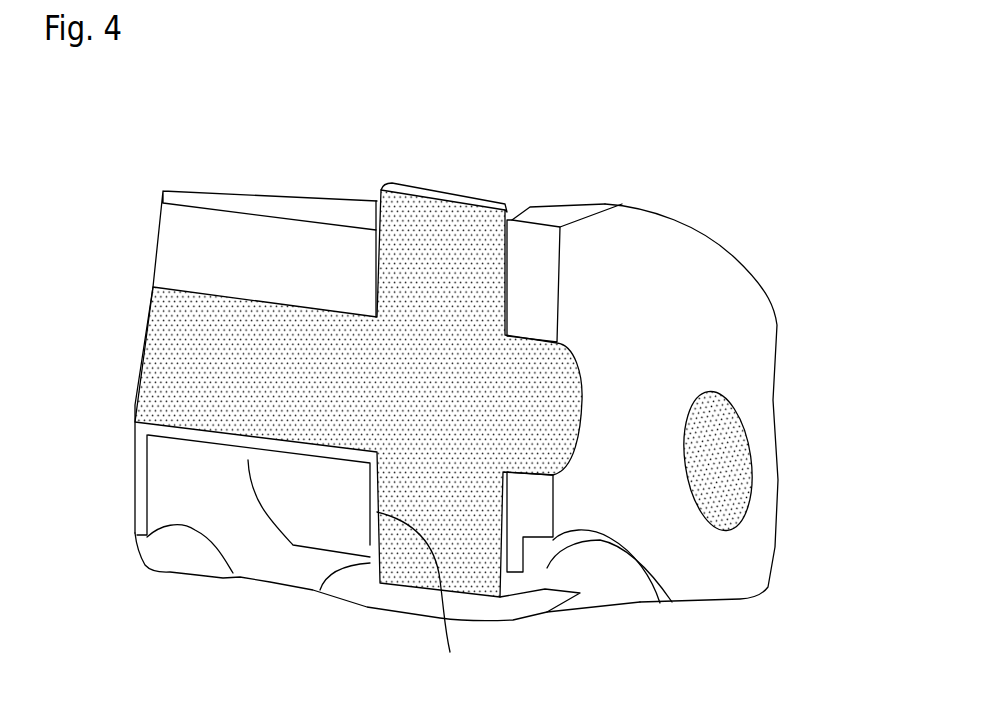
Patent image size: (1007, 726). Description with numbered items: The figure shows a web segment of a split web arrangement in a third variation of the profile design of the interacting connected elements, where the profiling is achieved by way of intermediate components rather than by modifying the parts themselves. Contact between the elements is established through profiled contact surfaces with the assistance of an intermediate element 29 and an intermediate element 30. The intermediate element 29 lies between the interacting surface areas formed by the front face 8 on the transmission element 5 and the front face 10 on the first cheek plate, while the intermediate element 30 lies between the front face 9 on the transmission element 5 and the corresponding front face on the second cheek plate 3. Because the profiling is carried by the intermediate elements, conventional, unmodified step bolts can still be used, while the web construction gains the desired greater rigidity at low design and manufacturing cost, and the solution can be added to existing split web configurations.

The second cheek plate 3 is at (223, 220).
The transmission element 5 is at (465, 228).
The front face 8 is at (517, 202).
The front face 9 is at (384, 188).
The front face 10 is at (528, 210).
The intermediate element 29 is at (512, 306).
The intermediate element 30 is at (376, 198).